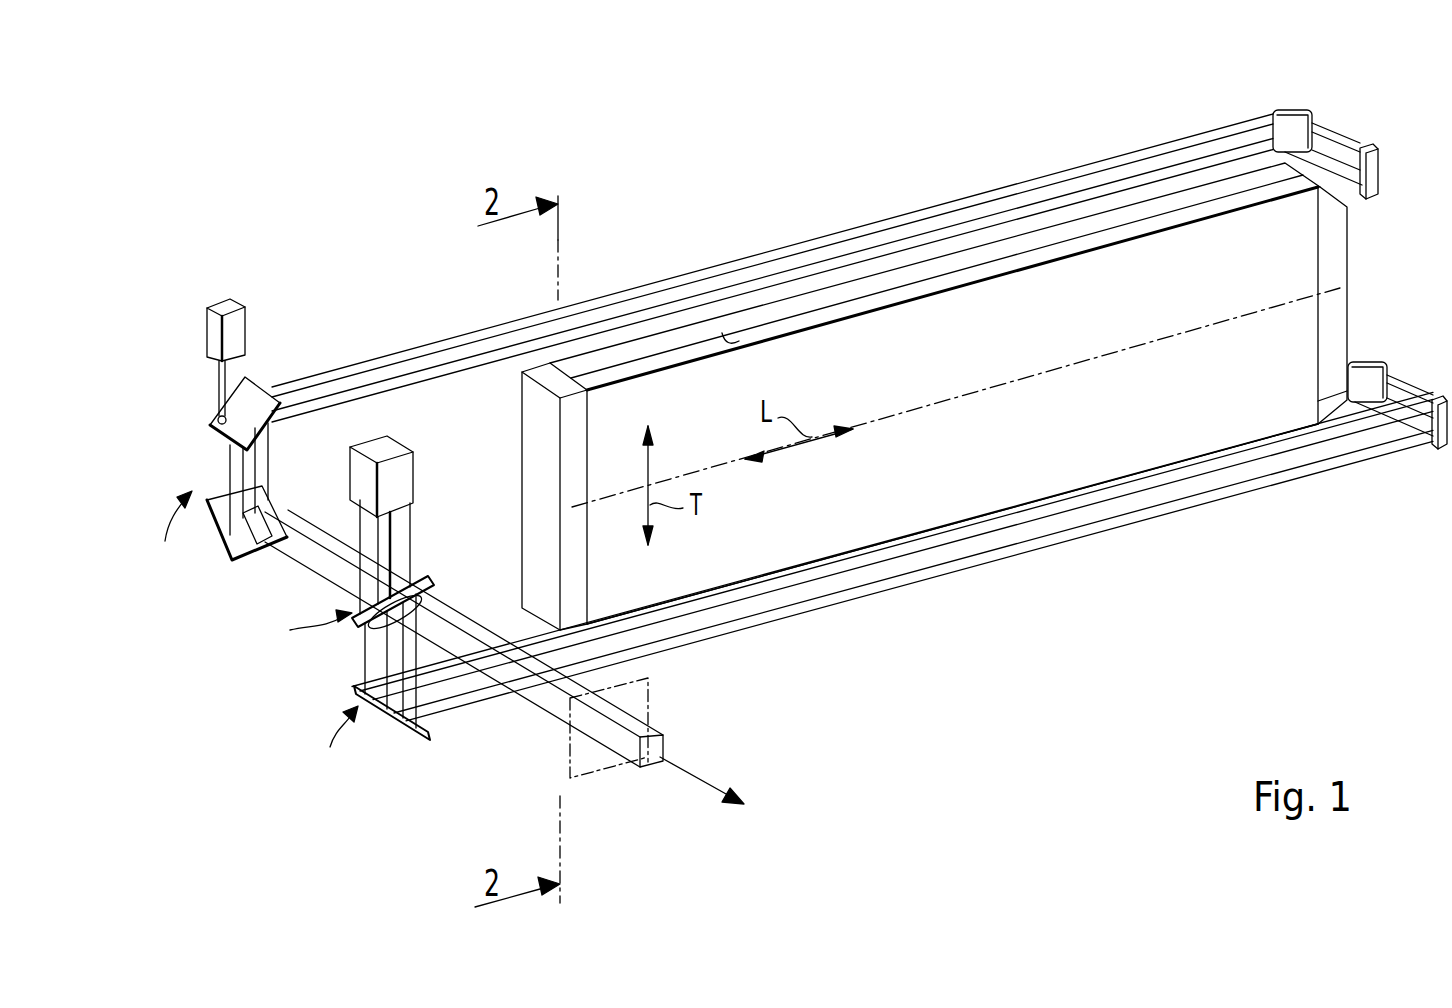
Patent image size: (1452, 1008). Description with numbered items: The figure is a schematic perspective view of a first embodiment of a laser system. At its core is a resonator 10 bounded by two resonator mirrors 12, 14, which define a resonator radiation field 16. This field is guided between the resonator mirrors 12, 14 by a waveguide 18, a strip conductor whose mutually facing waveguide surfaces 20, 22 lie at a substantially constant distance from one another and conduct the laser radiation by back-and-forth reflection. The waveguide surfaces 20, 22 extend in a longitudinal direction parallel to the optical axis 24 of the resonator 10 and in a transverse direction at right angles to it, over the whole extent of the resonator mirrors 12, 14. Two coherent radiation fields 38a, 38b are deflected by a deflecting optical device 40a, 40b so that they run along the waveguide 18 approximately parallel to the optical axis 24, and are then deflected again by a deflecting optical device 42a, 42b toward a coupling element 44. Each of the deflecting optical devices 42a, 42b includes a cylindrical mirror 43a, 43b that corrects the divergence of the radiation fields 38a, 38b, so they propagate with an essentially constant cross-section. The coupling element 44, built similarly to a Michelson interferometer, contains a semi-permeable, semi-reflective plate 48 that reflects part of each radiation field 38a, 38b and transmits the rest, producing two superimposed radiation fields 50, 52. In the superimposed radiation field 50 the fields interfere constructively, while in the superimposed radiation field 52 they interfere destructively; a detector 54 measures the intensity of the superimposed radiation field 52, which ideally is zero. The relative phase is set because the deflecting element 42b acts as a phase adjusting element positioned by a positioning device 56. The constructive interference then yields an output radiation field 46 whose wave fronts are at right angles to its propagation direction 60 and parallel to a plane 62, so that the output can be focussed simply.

The resonator 10 is at (977, 297).
The resonator mirror 12 is at (532, 481).
The resonator mirror 14 is at (1338, 245).
The resonator radiation field 16 is at (845, 287).
The waveguide 18 is at (812, 538).
The waveguide surface 20 is at (650, 352).
The waveguide surface 22 is at (737, 334).
The optical axis 24 is at (1010, 388).
The coherent radiation field 38a is at (1243, 478).
The coherent radiation field 38b is at (393, 373).
The deflecting optical device 40a is at (1431, 374).
The deflecting optical device 40b is at (1372, 126).
The deflecting optical device 42a is at (320, 733).
The deflecting optical device 42b is at (215, 528).
The cylindrical mirror 43a is at (395, 735).
The cylindrical mirror 43b is at (250, 390).
The coupling element 44 is at (307, 627).
The output radiation field 46 is at (632, 762).
The semi-permeable, semi-reflective plate 48 is at (425, 582).
The superimposed radiation field 50 is at (466, 630).
The superimposed radiation field 52 is at (388, 548).
The detector 54 is at (400, 443).
The positioning device 56 is at (242, 322).
The propagation direction 60 is at (695, 768).
The plane 62 is at (650, 703).